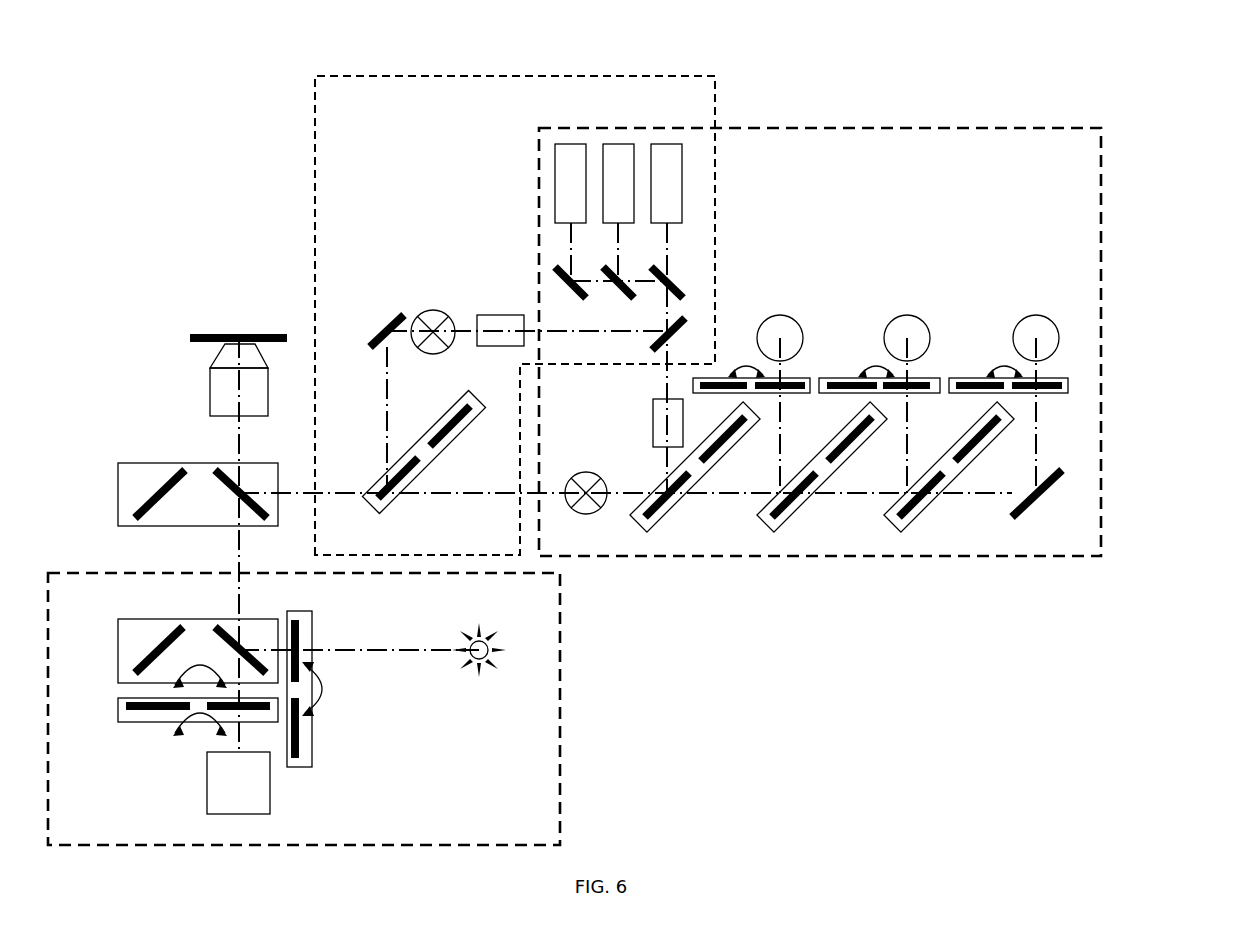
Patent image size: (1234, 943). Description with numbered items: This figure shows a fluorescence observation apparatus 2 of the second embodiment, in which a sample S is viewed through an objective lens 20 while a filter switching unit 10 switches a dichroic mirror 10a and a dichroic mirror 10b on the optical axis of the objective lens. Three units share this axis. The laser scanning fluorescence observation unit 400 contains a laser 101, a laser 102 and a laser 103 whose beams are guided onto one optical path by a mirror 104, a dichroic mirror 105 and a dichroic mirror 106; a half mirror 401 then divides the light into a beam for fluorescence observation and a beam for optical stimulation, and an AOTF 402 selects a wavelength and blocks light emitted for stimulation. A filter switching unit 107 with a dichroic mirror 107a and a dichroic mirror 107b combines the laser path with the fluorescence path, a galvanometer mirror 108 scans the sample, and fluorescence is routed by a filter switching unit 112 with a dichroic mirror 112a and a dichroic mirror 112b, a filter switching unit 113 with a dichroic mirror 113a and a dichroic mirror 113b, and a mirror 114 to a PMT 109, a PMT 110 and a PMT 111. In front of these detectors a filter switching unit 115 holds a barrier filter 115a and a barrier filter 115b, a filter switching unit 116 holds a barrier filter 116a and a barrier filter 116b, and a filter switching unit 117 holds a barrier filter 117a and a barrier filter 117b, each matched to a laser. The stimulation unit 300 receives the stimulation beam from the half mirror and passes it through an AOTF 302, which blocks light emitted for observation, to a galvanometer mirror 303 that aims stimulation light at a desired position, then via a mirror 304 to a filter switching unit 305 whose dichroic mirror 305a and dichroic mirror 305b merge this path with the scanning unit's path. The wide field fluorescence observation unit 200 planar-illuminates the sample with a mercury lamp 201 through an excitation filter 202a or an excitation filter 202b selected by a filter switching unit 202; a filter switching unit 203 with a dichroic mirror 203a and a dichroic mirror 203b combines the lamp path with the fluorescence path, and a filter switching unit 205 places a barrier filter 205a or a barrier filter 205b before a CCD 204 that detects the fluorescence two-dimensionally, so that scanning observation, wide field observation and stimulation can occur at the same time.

The fluorescence observation apparatus 2 is at (1125, 60).
The sample S is at (255, 338).
The objective lens 20 is at (210, 380).
The filter switching unit 10 is at (167, 510).
The dichroic mirror 10a is at (162, 497).
The dichroic mirror 10b is at (230, 495).
The stimulation unit 300 is at (370, 75).
The AOTF 302 is at (500, 315).
The galvanometer mirror 303 is at (433, 310).
The mirror 304 is at (383, 315).
The filter switching unit 305 is at (416, 438).
The dichroic mirror 305a is at (380, 497).
The dichroic mirror 305b is at (455, 410).
The laser scanning fluorescence observation unit 400 is at (1102, 188).
The laser 101 is at (571, 143).
The laser 102 is at (618, 143).
The laser 103 is at (666, 143).
The mirror 104 is at (570, 287).
The dichroic mirror 105 is at (624, 287).
The dichroic mirror 106 is at (665, 287).
The half mirror 401 is at (652, 347).
The AOTF 402 is at (653, 426).
The filter switching unit 107 is at (685, 476).
The dichroic mirror 107a is at (665, 500).
The dichroic mirror 107b is at (735, 430).
The galvanometer mirror 108 is at (580, 512).
The PMT 109 is at (776, 313).
The PMT 110 is at (903, 313).
The PMT 111 is at (1031, 313).
The filter switching unit 112 is at (796, 477).
The dichroic mirror 112a is at (788, 500).
The dichroic mirror 112b is at (851, 430).
The filter switching unit 113 is at (926, 477).
The dichroic mirror 113a is at (917, 500).
The dichroic mirror 113b is at (979, 427).
The mirror 114 is at (1024, 512).
The filter switching unit 115 is at (769, 365).
The barrier filter 115a is at (723, 377).
The barrier filter 115b is at (800, 377).
The filter switching unit 116 is at (895, 365).
The barrier filter 116a is at (838, 378).
The barrier filter 116b is at (925, 377).
The filter switching unit 117 is at (1022, 365).
The barrier filter 117a is at (966, 378).
The barrier filter 117b is at (1051, 377).
The wide field fluorescence observation unit 200 is at (560, 690).
The mercury lamp 201 is at (482, 637).
The filter switching unit 202 is at (341, 674).
The excitation filter 202a is at (300, 640).
The excitation filter 202b is at (300, 740).
The filter switching unit 203 is at (169, 633).
The dichroic mirror 203a is at (148, 650).
The dichroic mirror 203b is at (230, 640).
The CCD 204 is at (207, 805).
The filter switching unit 205 is at (174, 734).
The barrier filter 205a is at (150, 712).
The barrier filter 205b is at (253, 710).